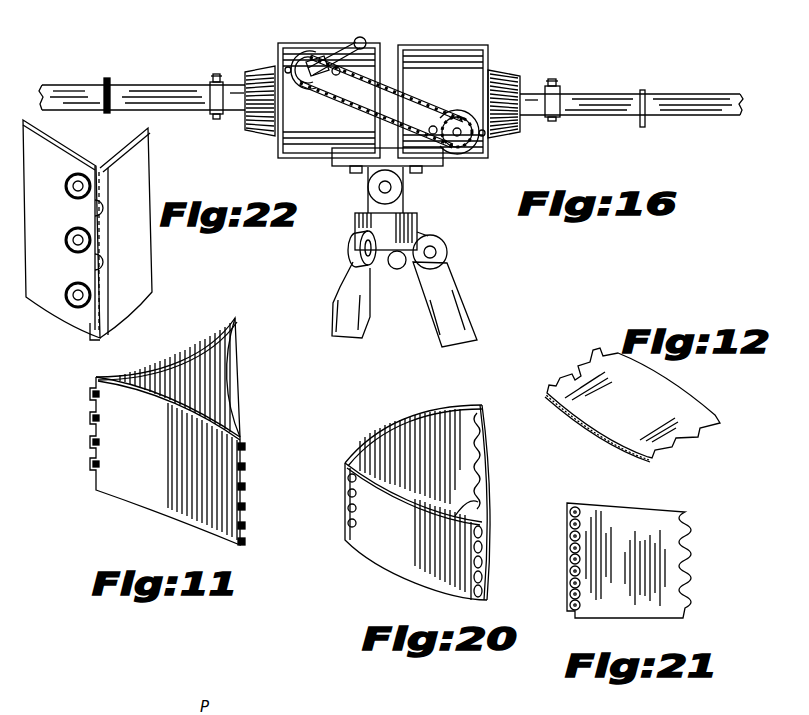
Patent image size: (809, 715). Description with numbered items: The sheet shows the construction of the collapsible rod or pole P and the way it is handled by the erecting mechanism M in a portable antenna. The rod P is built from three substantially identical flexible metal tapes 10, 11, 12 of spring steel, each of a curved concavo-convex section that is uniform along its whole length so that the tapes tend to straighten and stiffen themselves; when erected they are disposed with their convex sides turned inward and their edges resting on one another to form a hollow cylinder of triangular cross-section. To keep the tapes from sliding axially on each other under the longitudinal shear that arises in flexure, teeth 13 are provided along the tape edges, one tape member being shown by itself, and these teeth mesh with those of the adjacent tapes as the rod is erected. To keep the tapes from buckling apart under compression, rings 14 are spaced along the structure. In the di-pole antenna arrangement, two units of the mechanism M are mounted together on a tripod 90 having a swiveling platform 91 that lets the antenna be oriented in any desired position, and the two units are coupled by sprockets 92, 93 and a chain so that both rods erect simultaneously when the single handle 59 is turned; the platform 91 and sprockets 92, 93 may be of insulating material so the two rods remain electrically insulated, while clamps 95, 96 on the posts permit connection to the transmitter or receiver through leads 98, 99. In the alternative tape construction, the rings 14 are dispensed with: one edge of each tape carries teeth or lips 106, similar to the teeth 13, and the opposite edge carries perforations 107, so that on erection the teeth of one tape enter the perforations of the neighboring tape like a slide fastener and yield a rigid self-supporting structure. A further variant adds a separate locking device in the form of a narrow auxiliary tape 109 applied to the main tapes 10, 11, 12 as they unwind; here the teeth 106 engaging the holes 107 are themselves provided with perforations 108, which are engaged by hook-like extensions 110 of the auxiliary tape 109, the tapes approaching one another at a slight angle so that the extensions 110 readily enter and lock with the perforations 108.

In FIG. 16, the collapsible rod or pole P is at (151, 91).
In FIG. 22, the collapsible rod or pole P is at (147, 196).
In FIG. 11, the collapsible rod or pole P is at (203, 338).
In FIG. 20, the collapsible rod or pole P is at (442, 406).
In FIG. 16, the erecting mechanism M is at (290, 46).
In FIG. 16, the handle 59 is at (356, 38).
In FIG. 16, the clamp 95 is at (221, 68).
In FIG. 16, the lead 98 is at (208, 119).
In FIG. 16, the sprocket 92 is at (338, 84).
In FIG. 16, the sprocket 93 is at (470, 166).
In FIG. 16, the swiveling platform 91 is at (345, 166).
In FIG. 16, the tripod 90 is at (366, 303).
In FIG. 16, the clamp 96 is at (562, 92).
In FIG. 16, the lead 99 is at (553, 121).
In FIG. 16, the ring 14 is at (648, 93).
In FIG. 22, the flexible metal tape 10 is at (38, 302).
In FIG. 11, the flexible metal tape 10 is at (164, 500).
In FIG. 20, the flexible metal tape 10 is at (388, 552).
In FIG. 22, the flexible metal tape 11 is at (145, 272).
In FIG. 11, the flexible metal tape 11 is at (224, 383).
In FIG. 20, the flexible metal tape 11 is at (493, 450).
In FIG. 11, the flexible metal tape 12 is at (158, 370).
In FIG. 20, the flexible metal tape 12 is at (402, 424).
In FIG. 11, the teeth 13 is at (93, 418).
In FIG. 12, the teeth 13 is at (592, 360).
In FIG. 22, the teeth or lips 106 is at (68, 182).
In FIG. 20, the teeth or lips 106 is at (348, 511).
In FIG. 21, the teeth or lips 106 is at (688, 598).
In FIG. 20, the perforations 107 is at (348, 496).
In FIG. 21, the perforations 107 is at (570, 594).
In FIG. 22, the perforations 108 is at (78, 294).
In FIG. 22, the auxiliary tape 109 is at (98, 184).
In FIG. 22, the hook-like extensions 110 is at (75, 198).